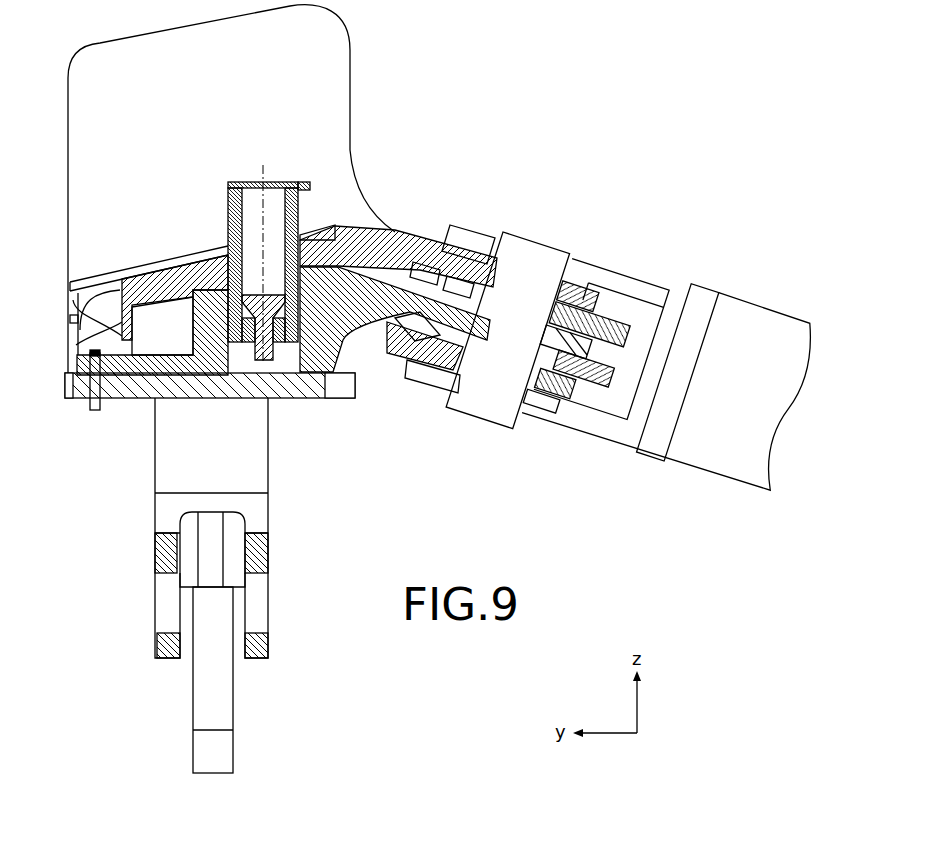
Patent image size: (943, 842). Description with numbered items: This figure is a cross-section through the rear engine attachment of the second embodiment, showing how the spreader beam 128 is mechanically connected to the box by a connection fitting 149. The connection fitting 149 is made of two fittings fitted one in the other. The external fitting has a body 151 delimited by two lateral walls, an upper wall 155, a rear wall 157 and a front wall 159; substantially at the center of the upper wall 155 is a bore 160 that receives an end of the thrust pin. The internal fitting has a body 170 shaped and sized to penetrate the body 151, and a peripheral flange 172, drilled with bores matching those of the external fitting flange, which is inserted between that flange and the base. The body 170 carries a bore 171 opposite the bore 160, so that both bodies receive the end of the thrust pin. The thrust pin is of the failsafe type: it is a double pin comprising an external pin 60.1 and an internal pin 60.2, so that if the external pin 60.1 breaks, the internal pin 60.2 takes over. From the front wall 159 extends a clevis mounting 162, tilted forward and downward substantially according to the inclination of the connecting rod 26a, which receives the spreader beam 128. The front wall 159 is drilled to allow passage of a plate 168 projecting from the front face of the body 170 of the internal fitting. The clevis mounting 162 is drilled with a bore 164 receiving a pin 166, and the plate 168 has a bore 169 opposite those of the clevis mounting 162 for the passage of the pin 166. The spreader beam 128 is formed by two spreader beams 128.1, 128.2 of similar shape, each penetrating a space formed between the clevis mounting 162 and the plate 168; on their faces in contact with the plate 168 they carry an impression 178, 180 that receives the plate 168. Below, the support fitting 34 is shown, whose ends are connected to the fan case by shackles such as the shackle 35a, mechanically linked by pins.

The external pin 60.1 is at (313, 197).
The internal pin 60.2 is at (232, 180).
The body 151 is at (128, 276).
The upper wall 155 is at (185, 276).
The rear wall 157 is at (72, 318).
The front wall 159 is at (378, 350).
The bore 160 is at (352, 223).
The clevis mounting 162 is at (440, 218).
The bore 164 is at (619, 306).
The pin 166 is at (575, 278).
The plate 168 is at (564, 400).
The bore 169 is at (528, 398).
The body 170 is at (312, 400).
The bore 171 is at (278, 345).
The peripheral flange 172 is at (122, 377).
The impression 178 is at (468, 250).
The impression 180 is at (433, 365).
The connection fitting 149 is at (592, 146).
The spreader beam 128 is at (662, 290).
The spreader beam 128.1 is at (612, 337).
The spreader beam 128.2 is at (610, 372).
The connecting rod 26a is at (783, 322).
The support fitting 34 is at (257, 512).
The shackle 35a is at (228, 707).